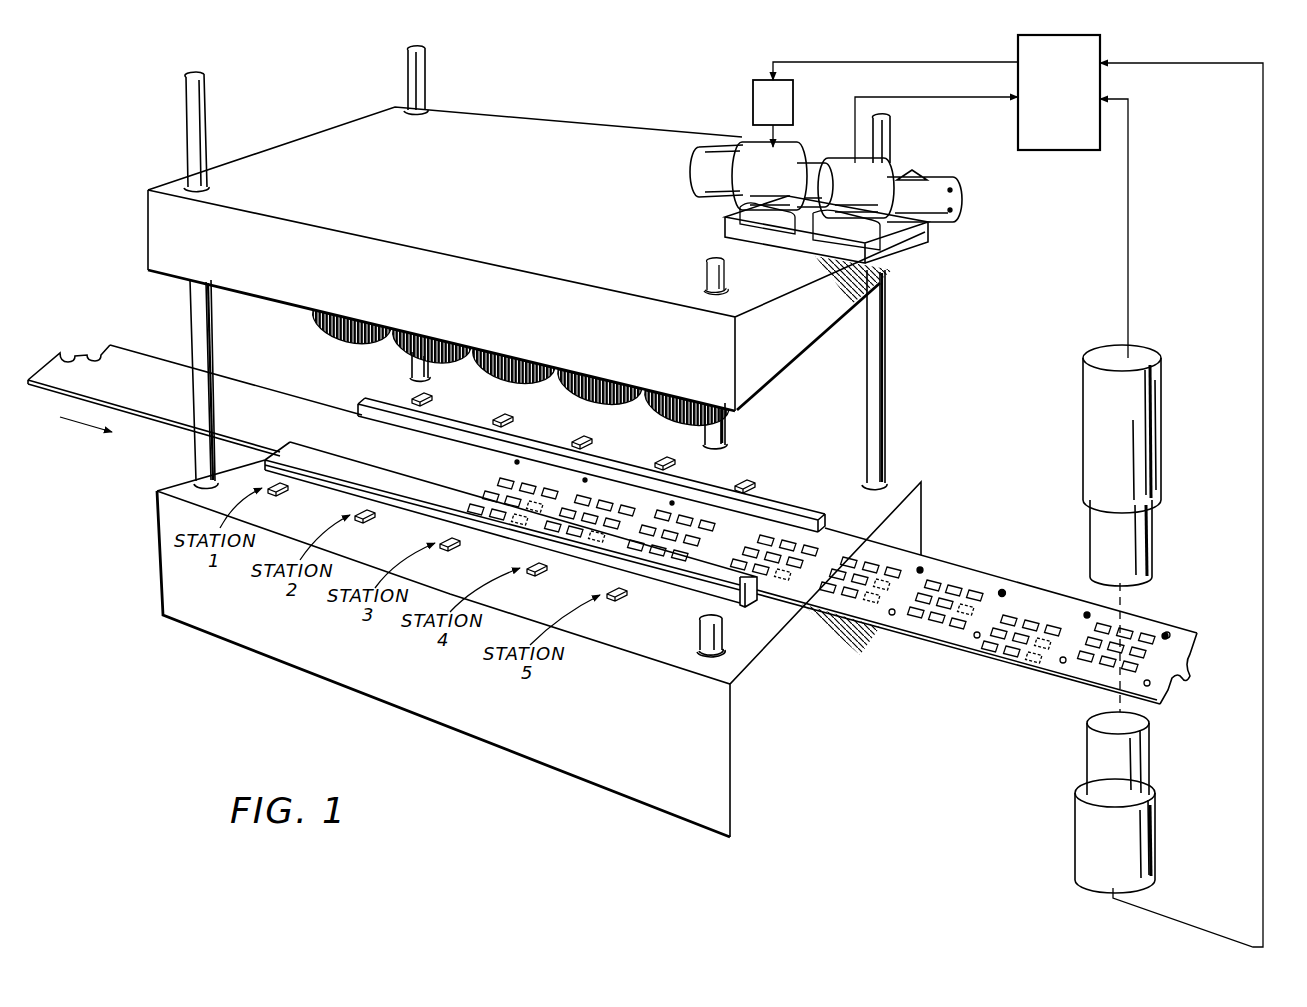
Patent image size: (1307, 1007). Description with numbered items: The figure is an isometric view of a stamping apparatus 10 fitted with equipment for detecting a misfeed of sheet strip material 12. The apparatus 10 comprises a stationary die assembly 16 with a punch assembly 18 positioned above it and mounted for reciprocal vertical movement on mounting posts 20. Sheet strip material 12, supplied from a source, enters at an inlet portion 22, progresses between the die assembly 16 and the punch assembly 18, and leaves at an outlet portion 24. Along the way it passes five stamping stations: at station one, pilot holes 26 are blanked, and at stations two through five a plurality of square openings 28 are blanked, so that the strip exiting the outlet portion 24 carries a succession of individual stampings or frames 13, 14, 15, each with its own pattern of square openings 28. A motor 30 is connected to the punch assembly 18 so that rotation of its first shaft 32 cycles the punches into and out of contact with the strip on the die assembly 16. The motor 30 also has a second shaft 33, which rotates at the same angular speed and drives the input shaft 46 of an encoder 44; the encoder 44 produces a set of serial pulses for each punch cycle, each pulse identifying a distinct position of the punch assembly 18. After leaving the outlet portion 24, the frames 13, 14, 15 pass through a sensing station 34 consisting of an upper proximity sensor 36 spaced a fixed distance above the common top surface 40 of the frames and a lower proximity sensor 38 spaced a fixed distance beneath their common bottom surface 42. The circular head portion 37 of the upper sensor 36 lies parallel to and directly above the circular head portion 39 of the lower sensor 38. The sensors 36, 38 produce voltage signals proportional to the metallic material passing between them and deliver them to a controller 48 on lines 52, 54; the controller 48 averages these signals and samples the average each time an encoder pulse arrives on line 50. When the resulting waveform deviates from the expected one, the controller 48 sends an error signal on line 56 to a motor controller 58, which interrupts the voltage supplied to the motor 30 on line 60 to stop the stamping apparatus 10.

The stamping apparatus 10 is at (652, 112).
The sheet strip material 12 is at (137, 346).
The stamping or frame 13 is at (1120, 708).
The stamping or frame 14 is at (1065, 695).
The stamping or frame 15 is at (940, 655).
The stationary die assembly 16 is at (665, 778).
The punch assembly 18 is at (328, 150).
The mounting posts 20 is at (432, 68).
The inlet portion 22 is at (372, 380).
The outlet portion 24 is at (905, 500).
The pilot holes 26 is at (425, 445).
The square openings 28 is at (450, 455).
The motor 30 is at (750, 140).
The first shaft 32 is at (696, 172).
The second shaft 33 is at (805, 176).
The sensing station 34 is at (1170, 518).
The upper proximity sensor 36 is at (1160, 346).
The circular head portion 37 is at (1148, 580).
The lower proximity sensor 38 is at (1160, 799).
The circular head portion 39 is at (1142, 725).
The common top surface 40 is at (1000, 590).
The common bottom surface 42 is at (1185, 652).
The encoder 44 is at (898, 168).
The input shaft 46 is at (835, 170).
The controller 48 is at (1104, 46).
The line 50 is at (940, 98).
The line 52 is at (1128, 165).
The line 54 is at (1263, 150).
The line 56 is at (925, 62).
The motor controller 58 is at (755, 84).
The line 60 is at (776, 129).